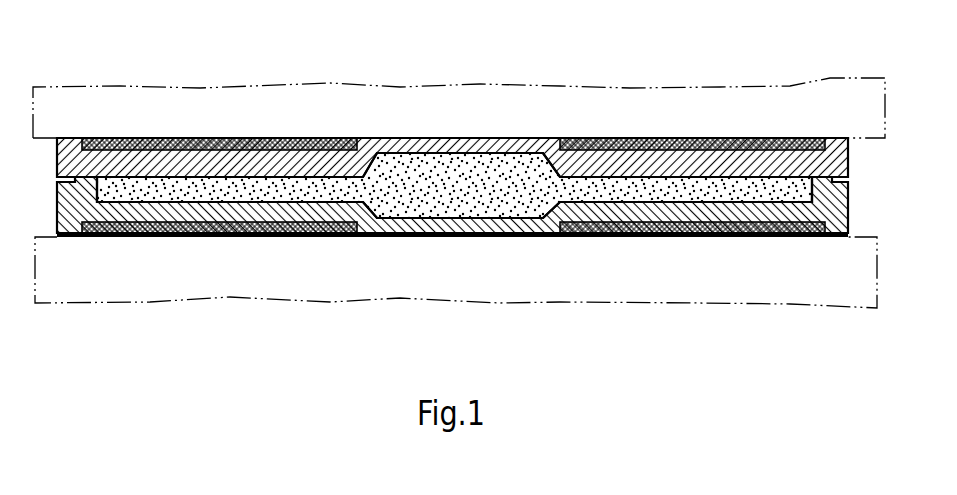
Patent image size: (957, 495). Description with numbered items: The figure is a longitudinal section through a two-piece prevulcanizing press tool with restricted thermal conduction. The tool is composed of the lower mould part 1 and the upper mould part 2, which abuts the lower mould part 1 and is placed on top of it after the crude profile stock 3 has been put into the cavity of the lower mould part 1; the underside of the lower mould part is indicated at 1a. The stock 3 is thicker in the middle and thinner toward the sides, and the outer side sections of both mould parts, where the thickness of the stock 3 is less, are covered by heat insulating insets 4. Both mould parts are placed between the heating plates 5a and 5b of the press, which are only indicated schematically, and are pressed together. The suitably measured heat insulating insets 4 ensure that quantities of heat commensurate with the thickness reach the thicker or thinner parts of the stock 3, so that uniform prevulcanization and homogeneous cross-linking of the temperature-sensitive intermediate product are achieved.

The lower mould part 1 is at (833, 224).
The bottom surface of lower electrode plate 1a is at (446, 237).
The upper mould part 2 is at (68, 153).
The crude profile stock 3 is at (477, 173).
The heat insulating insets 4 is at (130, 228).
The upper heating plate 5a is at (538, 115).
The lower heating plate 5b is at (167, 278).